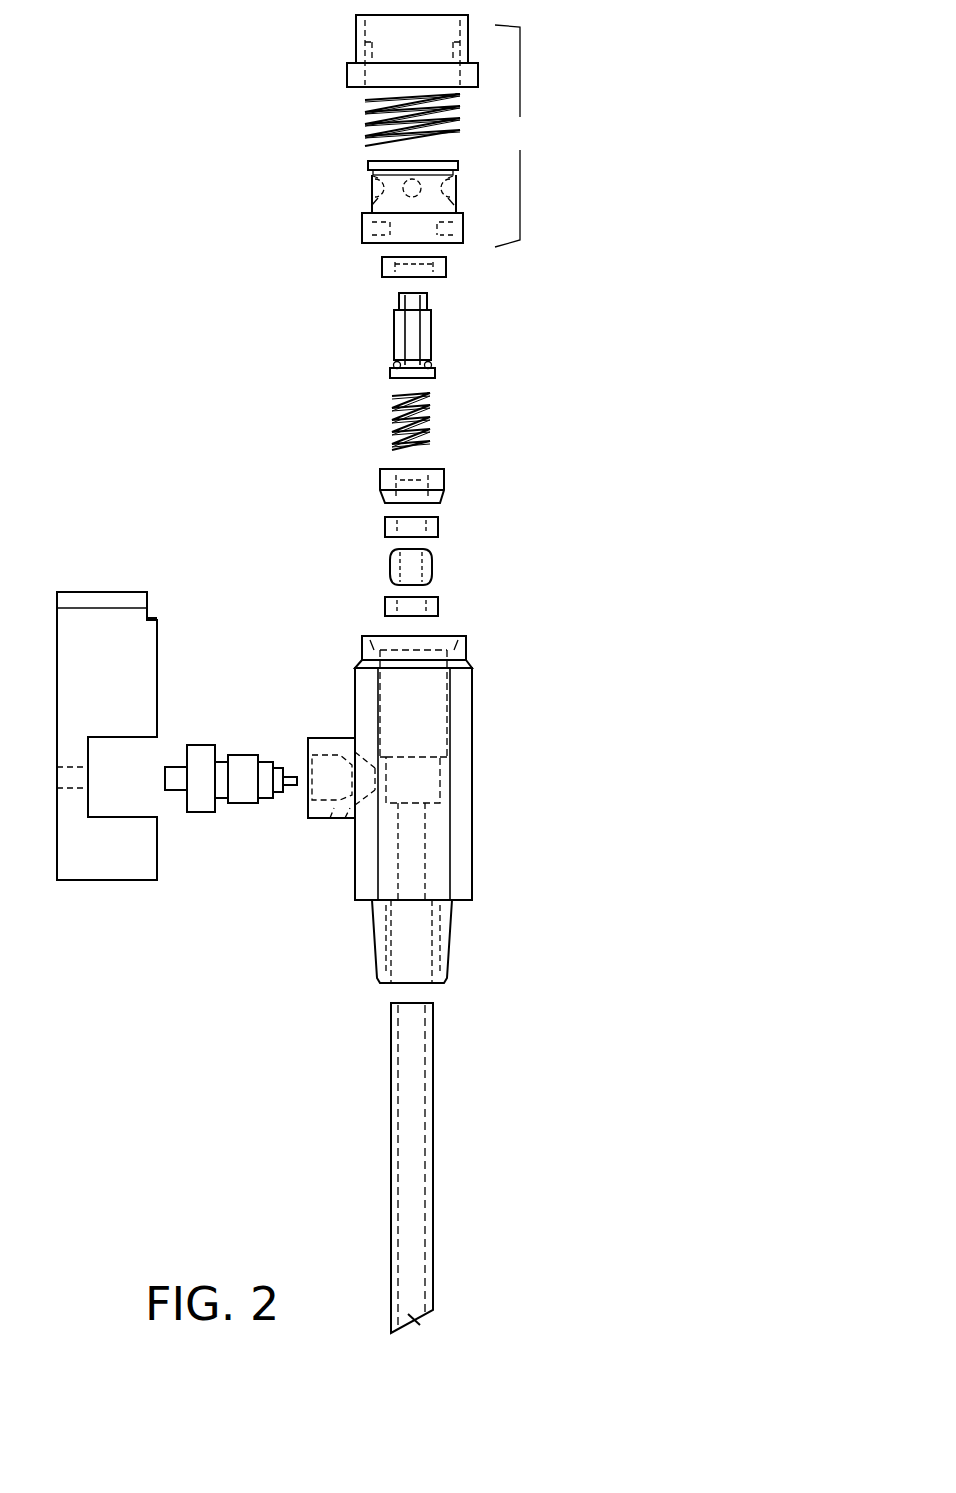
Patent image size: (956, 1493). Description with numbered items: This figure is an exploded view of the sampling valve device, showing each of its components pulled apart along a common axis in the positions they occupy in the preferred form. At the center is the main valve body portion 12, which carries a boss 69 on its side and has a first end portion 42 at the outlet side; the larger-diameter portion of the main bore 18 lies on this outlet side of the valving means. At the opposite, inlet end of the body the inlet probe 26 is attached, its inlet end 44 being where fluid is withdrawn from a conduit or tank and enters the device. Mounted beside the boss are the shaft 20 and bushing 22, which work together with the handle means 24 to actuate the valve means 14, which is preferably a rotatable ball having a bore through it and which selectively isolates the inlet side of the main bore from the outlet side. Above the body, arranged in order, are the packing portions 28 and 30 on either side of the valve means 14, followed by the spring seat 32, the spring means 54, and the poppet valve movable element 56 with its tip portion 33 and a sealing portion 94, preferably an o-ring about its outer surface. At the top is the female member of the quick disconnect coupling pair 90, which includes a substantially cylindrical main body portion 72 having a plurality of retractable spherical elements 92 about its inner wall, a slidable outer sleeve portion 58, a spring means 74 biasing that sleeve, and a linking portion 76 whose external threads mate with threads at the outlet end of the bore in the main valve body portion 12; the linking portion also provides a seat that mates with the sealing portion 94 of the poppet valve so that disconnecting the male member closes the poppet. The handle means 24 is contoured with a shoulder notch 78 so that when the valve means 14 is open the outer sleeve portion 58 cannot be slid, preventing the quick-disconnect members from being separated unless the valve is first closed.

The main valve body portion 12 is at (472, 810).
The valve means 14 is at (390, 567).
The main bore on the outlet side 18 is at (436, 683).
The shaft 20 is at (172, 781).
The bushing 22 is at (243, 755).
The handle means 24 is at (121, 688).
The inlet probe 26 is at (433, 1163).
The packing portion 28 is at (385, 607).
The packing portion 30 is at (385, 527).
The spring seat 32 is at (444, 485).
The tip portion 33 is at (399, 300).
The first end portion 42 is at (466, 640).
The inlet end 44 is at (410, 1313).
The spring means 54 is at (432, 420).
The poppet valve movable element 56 is at (394, 328).
The outer sleeve portion 58 is at (356, 48).
The boss 69 is at (330, 812).
The main body portion 72 is at (368, 207).
The spring means 74 is at (362, 115).
The linking portion 76 is at (446, 268).
The shoulder notch 78 is at (150, 616).
The female member of the quick disconnect coupling pair 90 is at (518, 136).
The retractable spherical elements 92 is at (370, 183).
The sealing portion 94 is at (393, 365).